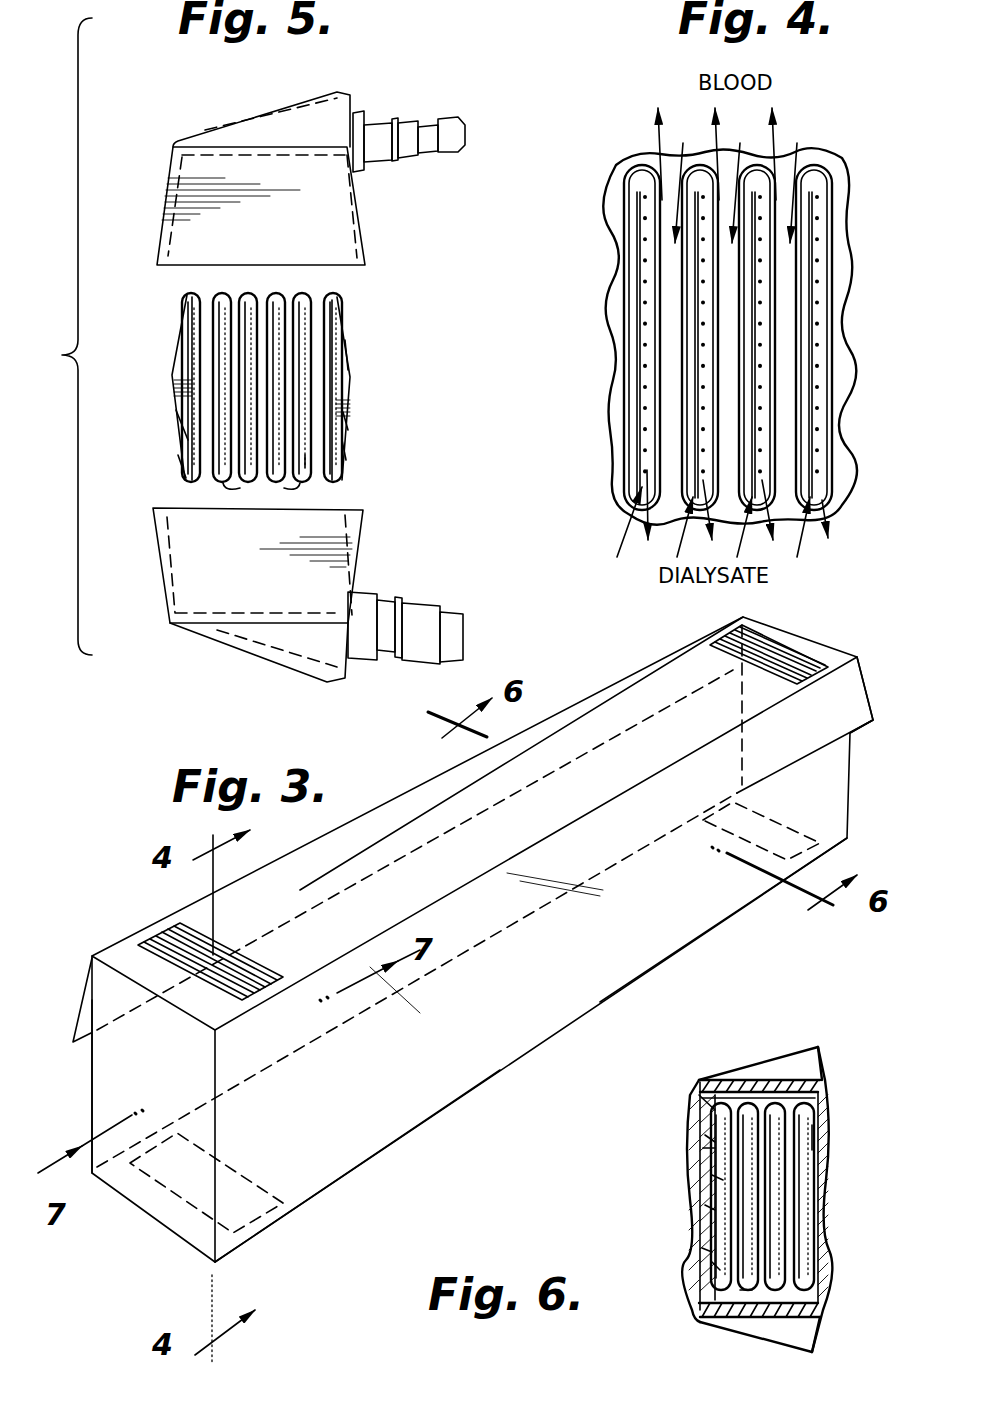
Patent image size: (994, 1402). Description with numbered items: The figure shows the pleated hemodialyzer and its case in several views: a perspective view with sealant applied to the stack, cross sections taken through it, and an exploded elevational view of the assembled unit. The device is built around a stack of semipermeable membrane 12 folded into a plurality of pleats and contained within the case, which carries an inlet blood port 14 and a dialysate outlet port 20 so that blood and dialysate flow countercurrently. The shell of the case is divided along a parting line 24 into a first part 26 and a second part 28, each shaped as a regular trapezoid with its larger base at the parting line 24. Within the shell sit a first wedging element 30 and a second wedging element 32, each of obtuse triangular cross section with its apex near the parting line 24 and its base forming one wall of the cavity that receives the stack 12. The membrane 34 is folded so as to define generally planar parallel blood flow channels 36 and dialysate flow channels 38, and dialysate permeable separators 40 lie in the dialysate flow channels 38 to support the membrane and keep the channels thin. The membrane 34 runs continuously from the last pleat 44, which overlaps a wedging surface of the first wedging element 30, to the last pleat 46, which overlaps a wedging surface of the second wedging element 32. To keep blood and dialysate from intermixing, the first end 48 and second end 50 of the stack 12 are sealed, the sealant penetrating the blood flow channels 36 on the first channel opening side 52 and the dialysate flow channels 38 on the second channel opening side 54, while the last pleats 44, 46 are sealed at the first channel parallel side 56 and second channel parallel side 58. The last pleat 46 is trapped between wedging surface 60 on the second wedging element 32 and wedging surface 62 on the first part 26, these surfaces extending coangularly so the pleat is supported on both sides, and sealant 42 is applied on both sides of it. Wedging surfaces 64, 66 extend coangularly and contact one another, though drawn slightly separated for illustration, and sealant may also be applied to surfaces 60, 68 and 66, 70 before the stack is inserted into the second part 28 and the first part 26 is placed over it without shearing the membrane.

In FIG. 3, the stack of semipermeable membrane 12 is at (552, 697).
In FIG. 5, the inlet blood port 14 is at (449, 128).
In FIG. 5, the dialysate outlet port 20 is at (428, 612).
In FIG. 6, the parting line 24 is at (695, 1200).
In FIG. 5, the first part 26 is at (207, 165).
In FIG. 6, the first part 26 is at (787, 1082).
In FIG. 5, the second part 28 is at (205, 590).
In FIG. 6, the second part 28 is at (808, 1317).
In FIG. 5, the first wedging element 30 is at (342, 418).
In FIG. 5, the second wedging element 32 is at (182, 425).
In FIG. 6, the second wedging element 32 is at (713, 1210).
In FIG. 5, the membrane 34 is at (333, 296).
In FIG. 6, the membrane 34 is at (813, 1137).
In FIG. 5, the blood flow channels 36 is at (290, 298).
In FIG. 4, the blood flow channels 36 is at (672, 375).
In FIG. 6, the blood flow channels 36 is at (762, 1250).
In FIG. 5, the dialysate flow channels 38 is at (327, 470).
In FIG. 4, the dialysate flow channels 38 is at (693, 268).
In FIG. 6, the dialysate flow channels 38 is at (750, 1188).
In FIG. 5, the dialysate permeable separators 40 is at (300, 483).
In FIG. 6, the sealant 42 is at (797, 1098).
In FIG. 5, the last pleat 44 is at (352, 355).
In FIG. 3, the last pleat 44 is at (860, 705).
In FIG. 5, the last pleat 46 is at (180, 318).
In FIG. 3, the last pleat 46 is at (73, 1005).
In FIG. 6, the last pleat 46 is at (695, 1110).
In FIG. 3, the first end 48 is at (163, 1103).
In FIG. 3, the second end 50 is at (830, 647).
In FIG. 3, the first channel opening side 52 is at (413, 823).
In FIG. 6, the first channel opening side 52 is at (760, 1100).
In FIG. 3, the second channel opening side 54 is at (687, 945).
In FIG. 6, the second channel opening side 54 is at (747, 1287).
In FIG. 5, the first channel parallel side 56 is at (333, 398).
In FIG. 3, the first channel parallel side 56 is at (418, 1067).
In FIG. 5, the second channel parallel side 58 is at (195, 405).
In FIG. 3, the second channel parallel side 58 is at (92, 1100).
In FIG. 6, the second channel parallel side 58 is at (723, 1180).
In FIG. 5, the wedging surface 60 is at (182, 342).
In FIG. 6, the wedging surface 60 is at (713, 1142).
In FIG. 6, the wedging surface 62 is at (710, 1148).
In FIG. 6, the wedging surface 64 is at (707, 1248).
In FIG. 5, the wedging surface 66 is at (178, 455).
In FIG. 6, the wedging surface 66 is at (718, 1265).
In FIG. 5, the surface 68 is at (344, 333).
In FIG. 5, the surface 70 is at (342, 445).